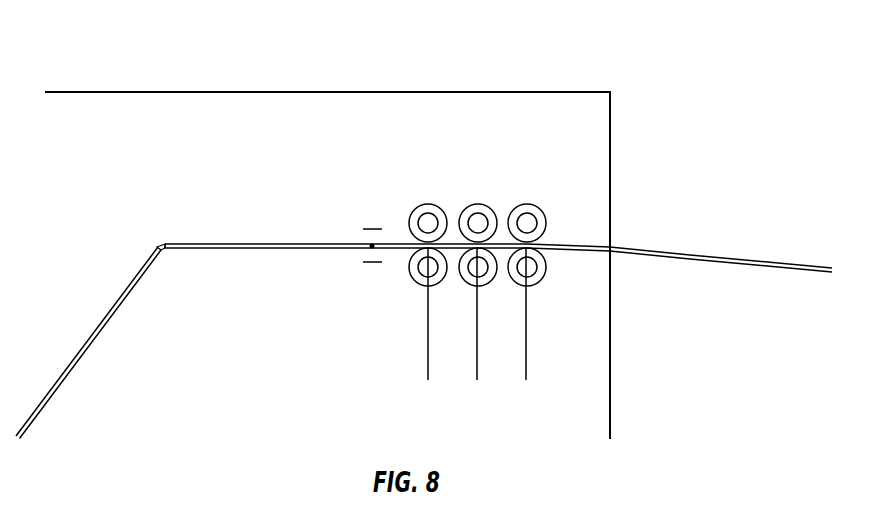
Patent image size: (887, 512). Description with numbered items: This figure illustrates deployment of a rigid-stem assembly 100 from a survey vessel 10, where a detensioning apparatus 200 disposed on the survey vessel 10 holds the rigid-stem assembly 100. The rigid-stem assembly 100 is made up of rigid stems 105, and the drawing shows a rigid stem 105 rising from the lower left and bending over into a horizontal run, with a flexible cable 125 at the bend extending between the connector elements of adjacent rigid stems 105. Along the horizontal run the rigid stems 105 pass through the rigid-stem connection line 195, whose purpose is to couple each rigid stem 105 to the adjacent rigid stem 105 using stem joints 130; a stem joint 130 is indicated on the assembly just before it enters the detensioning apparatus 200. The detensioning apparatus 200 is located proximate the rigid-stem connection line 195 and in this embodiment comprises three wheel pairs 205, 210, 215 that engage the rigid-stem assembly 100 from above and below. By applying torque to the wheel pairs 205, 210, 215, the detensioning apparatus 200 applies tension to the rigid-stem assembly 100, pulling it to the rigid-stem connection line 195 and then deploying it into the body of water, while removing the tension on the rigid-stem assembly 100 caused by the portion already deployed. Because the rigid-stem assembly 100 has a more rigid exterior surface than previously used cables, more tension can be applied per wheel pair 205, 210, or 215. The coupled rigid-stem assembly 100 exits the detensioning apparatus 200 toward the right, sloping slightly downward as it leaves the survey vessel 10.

The survey vessel 10 is at (215, 91).
The rigid-stem assembly 100 is at (723, 241).
The rigid stem 105 is at (107, 312).
The flexible cable 125 is at (163, 247).
The stem joint 130 is at (371, 245).
The rigid-stem connection line 195 is at (374, 226).
The detensioning apparatus 200 is at (485, 266).
The wheel pair 205 is at (420, 288).
The wheel pair 210 is at (469, 288).
The wheel pair 215 is at (517, 288).